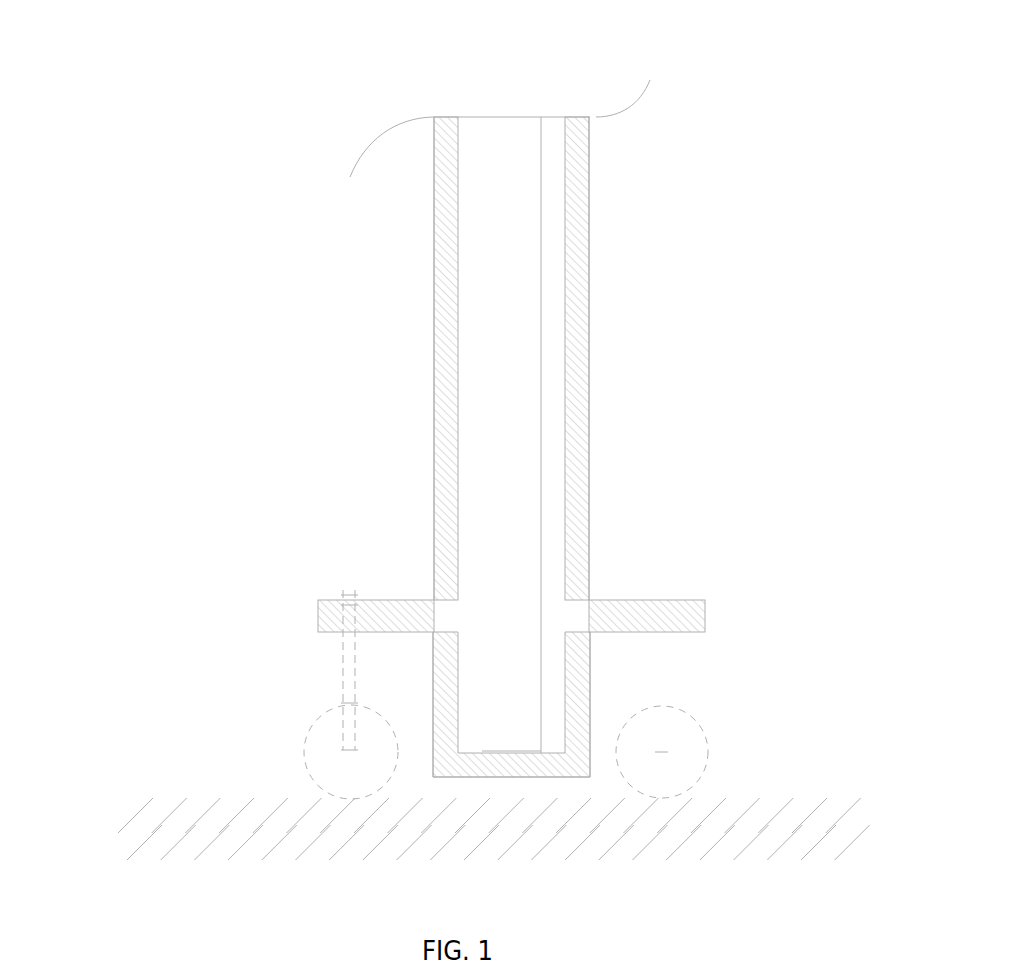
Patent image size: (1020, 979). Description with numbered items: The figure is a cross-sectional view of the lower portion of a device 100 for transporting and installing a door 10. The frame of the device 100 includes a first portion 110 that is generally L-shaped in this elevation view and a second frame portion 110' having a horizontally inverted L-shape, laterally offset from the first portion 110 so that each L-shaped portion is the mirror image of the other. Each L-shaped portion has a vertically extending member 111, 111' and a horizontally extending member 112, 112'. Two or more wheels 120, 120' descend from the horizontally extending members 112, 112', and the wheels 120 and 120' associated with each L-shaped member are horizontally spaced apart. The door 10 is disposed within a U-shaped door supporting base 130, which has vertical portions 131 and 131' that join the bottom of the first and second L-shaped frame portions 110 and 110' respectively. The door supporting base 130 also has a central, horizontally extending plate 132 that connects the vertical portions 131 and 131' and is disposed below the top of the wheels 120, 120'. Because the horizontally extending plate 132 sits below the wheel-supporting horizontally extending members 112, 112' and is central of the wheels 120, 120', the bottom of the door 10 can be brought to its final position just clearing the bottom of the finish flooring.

The device 100 is at (288, 170).
The door 10 is at (509, 136).
The first portion 110 is at (300, 358).
The second frame portion 110' is at (696, 358).
The vertically extending member 111 is at (323, 358).
The vertically extending member 111' is at (714, 358).
The horizontally extending member 112 is at (275, 559).
The horizontally extending member 112' is at (732, 559).
The wheel 120 is at (281, 694).
The wheel 120' is at (751, 709).
The door supporting base 130 is at (403, 629).
The vertical portion 131 is at (340, 803).
The vertical portion 131' is at (655, 798).
The horizontally extending plate 132 is at (511, 777).